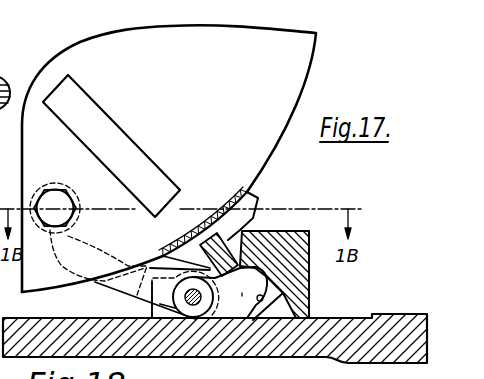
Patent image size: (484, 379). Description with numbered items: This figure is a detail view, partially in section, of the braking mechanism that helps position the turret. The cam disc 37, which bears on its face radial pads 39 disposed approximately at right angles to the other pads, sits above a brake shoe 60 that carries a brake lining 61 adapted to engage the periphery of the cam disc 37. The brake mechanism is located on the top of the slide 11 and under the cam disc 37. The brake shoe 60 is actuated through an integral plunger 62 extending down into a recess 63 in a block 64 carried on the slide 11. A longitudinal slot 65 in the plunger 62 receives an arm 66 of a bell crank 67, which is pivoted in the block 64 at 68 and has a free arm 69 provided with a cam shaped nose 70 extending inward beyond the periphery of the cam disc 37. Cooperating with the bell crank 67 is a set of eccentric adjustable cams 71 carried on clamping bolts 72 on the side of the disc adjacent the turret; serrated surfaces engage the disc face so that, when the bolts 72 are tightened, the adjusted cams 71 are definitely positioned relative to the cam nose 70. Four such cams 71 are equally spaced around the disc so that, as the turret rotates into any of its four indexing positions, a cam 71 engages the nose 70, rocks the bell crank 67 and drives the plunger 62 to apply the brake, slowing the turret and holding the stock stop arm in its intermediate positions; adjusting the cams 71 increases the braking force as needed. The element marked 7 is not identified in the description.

The roller 7 is at (0, 72).
The slide 11 is at (70, 320).
The cam disc 37 is at (296, 100).
The radial pads 39 is at (152, 170).
The brake shoe 60 is at (256, 201).
The brake lining 61 is at (251, 192).
The plunger 62 is at (244, 240).
The recess 63 is at (281, 296).
The block 64 is at (308, 233).
The longitudinal slot 65 is at (283, 280).
The arm of bell crank 66 is at (242, 293).
The bell crank 67 is at (152, 307).
The pivot 68 is at (190, 295).
The free arm 69 is at (118, 285).
The cam shaped nose 70 is at (58, 264).
The eccentric adjustable cam 71 is at (82, 220).
The clamping bolt 72 is at (64, 199).